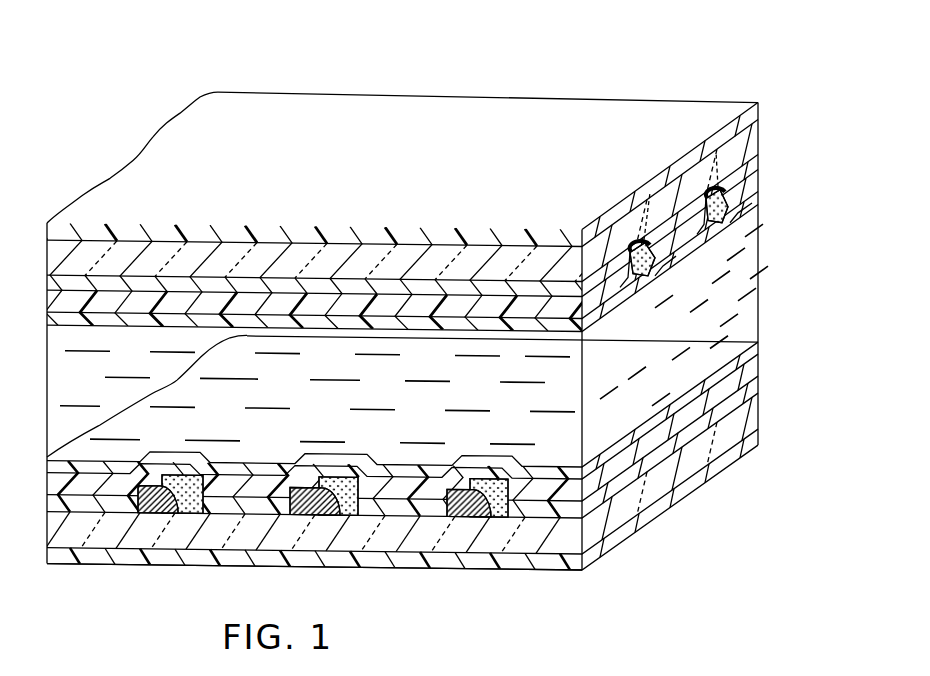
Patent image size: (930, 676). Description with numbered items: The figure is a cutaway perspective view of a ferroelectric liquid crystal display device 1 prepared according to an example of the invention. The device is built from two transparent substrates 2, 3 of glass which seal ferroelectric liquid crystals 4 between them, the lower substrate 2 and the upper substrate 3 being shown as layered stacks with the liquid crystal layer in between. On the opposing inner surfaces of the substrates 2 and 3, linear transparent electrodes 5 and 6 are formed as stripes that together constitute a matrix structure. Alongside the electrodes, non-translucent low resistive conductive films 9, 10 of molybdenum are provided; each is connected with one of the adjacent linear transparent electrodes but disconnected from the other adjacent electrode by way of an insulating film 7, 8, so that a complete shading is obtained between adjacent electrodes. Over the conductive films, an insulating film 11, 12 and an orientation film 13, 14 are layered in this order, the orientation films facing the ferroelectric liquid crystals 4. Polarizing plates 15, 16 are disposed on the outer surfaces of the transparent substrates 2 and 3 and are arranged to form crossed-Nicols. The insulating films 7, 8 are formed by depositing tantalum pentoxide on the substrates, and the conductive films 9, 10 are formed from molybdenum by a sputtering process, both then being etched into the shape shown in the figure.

The ferroelectric liquid crystal display device 1 is at (398, 107).
The transparent substrate 2 is at (752, 406).
The transparent substrate 3 is at (752, 141).
The ferroelectric liquid crystals 4 is at (752, 269).
The linear transparent electrode 5 is at (752, 378).
The linear transparent electrode 6 is at (760, 163).
The insulating film 7 is at (470, 509).
The insulating film 8 is at (718, 171).
The non-translucent low resistive conductive film 9 is at (494, 512).
The non-translucent low resistive conductive film 10 is at (708, 184).
The insulating film 11 is at (752, 363).
The insulating film 12 is at (750, 181).
The orientation film 13 is at (752, 344).
The orientation film 14 is at (753, 199).
The polarizing plate 15 is at (747, 436).
The polarizing plate 16 is at (752, 108).